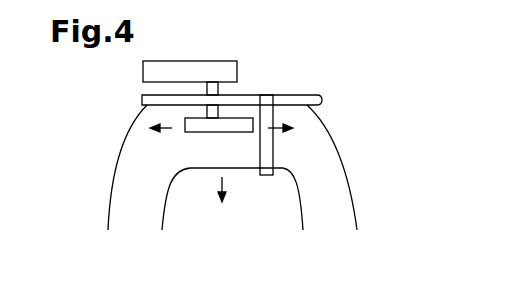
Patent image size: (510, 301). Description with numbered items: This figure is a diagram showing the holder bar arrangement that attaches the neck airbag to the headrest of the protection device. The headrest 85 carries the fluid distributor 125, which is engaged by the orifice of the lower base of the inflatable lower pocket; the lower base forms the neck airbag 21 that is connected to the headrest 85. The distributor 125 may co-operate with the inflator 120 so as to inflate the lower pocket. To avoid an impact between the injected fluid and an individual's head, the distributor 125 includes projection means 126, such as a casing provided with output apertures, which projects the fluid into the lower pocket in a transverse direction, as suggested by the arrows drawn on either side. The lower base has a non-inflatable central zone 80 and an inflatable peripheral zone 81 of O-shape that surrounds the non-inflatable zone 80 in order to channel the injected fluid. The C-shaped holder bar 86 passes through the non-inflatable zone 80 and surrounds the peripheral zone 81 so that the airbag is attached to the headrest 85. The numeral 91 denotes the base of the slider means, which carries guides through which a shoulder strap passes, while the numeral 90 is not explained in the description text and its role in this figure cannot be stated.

The inflator 120 is at (212, 61).
The fluid distributor 125 is at (247, 95).
The projection means 126 is at (185, 121).
The headrest 85 is at (322, 100).
The holder bar 86 is at (273, 155).
The neck airbag 21 is at (283, 167).
The inflatable peripheral zone 81 is at (323, 150).
The non-inflatable central zone 80 is at (268, 227).
The element 90 is at (420, 0).
The base 91 is at (502, 0).